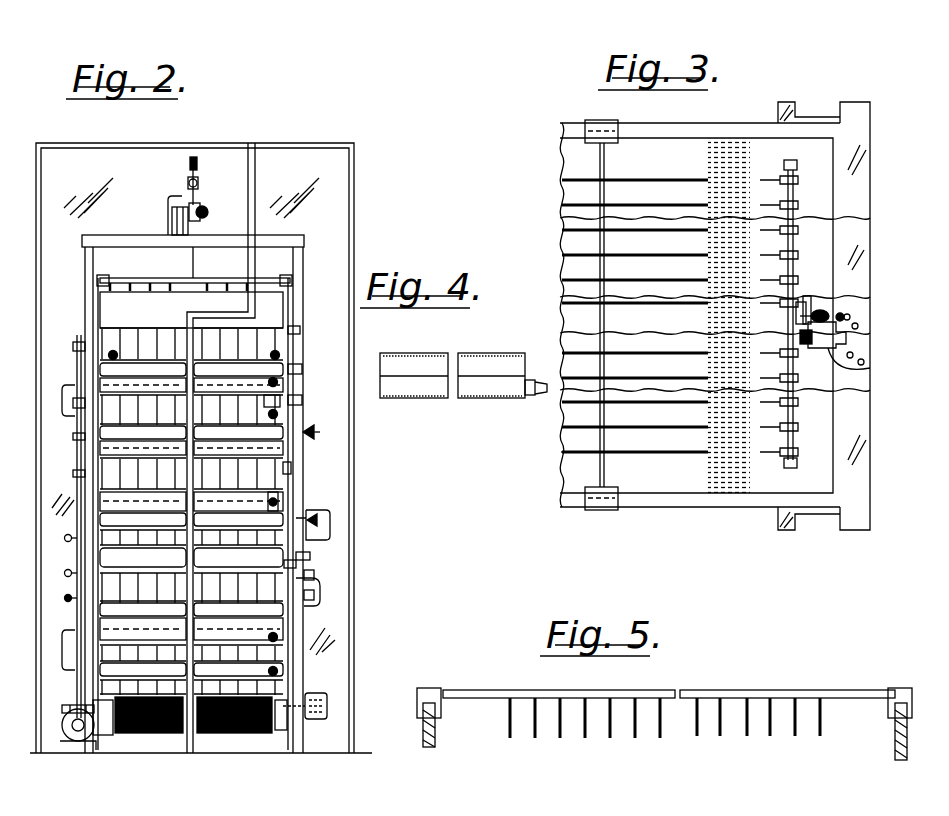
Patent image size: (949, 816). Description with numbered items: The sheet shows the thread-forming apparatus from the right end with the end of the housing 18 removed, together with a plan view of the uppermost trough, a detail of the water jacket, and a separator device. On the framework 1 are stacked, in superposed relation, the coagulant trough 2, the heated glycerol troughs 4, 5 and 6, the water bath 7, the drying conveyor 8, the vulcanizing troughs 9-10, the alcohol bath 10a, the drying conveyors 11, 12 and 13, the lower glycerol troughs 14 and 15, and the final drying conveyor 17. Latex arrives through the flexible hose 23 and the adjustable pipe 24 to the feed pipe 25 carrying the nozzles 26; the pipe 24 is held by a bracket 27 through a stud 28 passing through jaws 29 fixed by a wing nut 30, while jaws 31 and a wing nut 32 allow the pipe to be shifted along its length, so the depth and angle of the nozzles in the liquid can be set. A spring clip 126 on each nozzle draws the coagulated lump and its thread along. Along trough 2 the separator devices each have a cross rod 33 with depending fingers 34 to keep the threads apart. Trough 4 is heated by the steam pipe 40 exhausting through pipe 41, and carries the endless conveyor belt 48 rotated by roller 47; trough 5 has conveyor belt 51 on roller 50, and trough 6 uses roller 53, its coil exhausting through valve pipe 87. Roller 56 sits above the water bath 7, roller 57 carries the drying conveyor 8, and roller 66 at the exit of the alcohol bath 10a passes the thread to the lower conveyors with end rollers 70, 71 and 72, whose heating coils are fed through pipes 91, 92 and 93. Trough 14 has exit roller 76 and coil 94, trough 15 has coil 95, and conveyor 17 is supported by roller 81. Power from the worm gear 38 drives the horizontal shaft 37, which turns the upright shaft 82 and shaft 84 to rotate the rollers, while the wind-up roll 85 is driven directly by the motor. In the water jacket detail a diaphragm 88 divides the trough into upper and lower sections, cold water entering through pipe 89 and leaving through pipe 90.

In FIG. 2, the framework 1 is at (82, 246).
In FIG. 3, the framework 1 is at (817, 112).
In FIG. 2, the trough 2 is at (147, 292).
In FIG. 3, the trough 2 is at (697, 507).
In FIG. 5, the trough 2 is at (420, 731).
In FIG. 2, the trough 4 is at (292, 346).
In FIG. 2, the trough 5 is at (296, 385).
In FIG. 2, the trough 6 is at (296, 415).
In FIG. 2, the water bath 7 is at (296, 456).
In FIG. 2, the drying conveyor 8 is at (290, 472).
In FIG. 2, the trough 9 is at (290, 498).
In FIG. 4, the troughs 9-10 is at (428, 398).
In FIG. 2, the alcohol bath 10a is at (296, 553).
In FIG. 2, the drying conveyor 11 is at (296, 566).
In FIG. 2, the drying conveyor 12 is at (306, 588).
In FIG. 2, the drying conveyor 13 is at (305, 609).
In FIG. 2, the trough 14 is at (292, 636).
In FIG. 2, the trough 15 is at (296, 669).
In FIG. 2, the drying conveyor 17 is at (288, 699).
In FIG. 2, the housing 18 is at (40, 269).
In FIG. 2, the flexible hose 23 is at (198, 164).
In FIG. 3, the flexible hose 23 is at (845, 316).
In FIG. 2, the adjustable pipe 24 is at (199, 191).
In FIG. 3, the adjustable pipe 24 is at (807, 300).
In FIG. 3, the feed pipe 25 is at (796, 244).
In FIG. 3, the nozzles 26 is at (780, 178).
In FIG. 2, the bracket 27 is at (172, 213).
In FIG. 3, the bracket 27 is at (848, 338).
In FIG. 2, the stud 28 is at (175, 203).
In FIG. 3, the stud 28 is at (830, 352).
In FIG. 3, the jaws 29 is at (796, 318).
In FIG. 3, the wing nut 30 is at (800, 340).
In FIG. 2, the jaws 31 is at (208, 211).
In FIG. 3, the jaws 31 is at (832, 312).
In FIG. 2, the wing nut 32 is at (205, 218).
In FIG. 3, the wing nut 32 is at (886, 306).
In FIG. 2, the cross rod 33 is at (268, 279).
In FIG. 3, the cross rod 33 is at (606, 246).
In FIG. 5, the cross rod 33 is at (782, 695).
In FIG. 2, the fingers 34 is at (170, 285).
In FIG. 5, the fingers 34 is at (536, 738).
In FIG. 2, the horizontal shaft 37 is at (77, 740).
In FIG. 2, the worm gear 38 is at (60, 718).
In FIG. 2, the steam pipe 40 is at (275, 350).
In FIG. 2, the pipe 41 is at (115, 350).
In FIG. 2, the roller 47 is at (296, 328).
In FIG. 2, the endless conveyor belt 48 is at (149, 330).
In FIG. 2, the roller 50 is at (302, 366).
In FIG. 2, the conveyor belt 51 is at (191, 369).
In FIG. 2, the roller 53 is at (302, 399).
In FIG. 2, the roller 56 is at (304, 437).
In FIG. 2, the roller 57 is at (292, 471).
In FIG. 2, the roller 66 is at (330, 526).
In FIG. 2, the roller 70 is at (310, 557).
In FIG. 2, the roller 71 is at (314, 575).
In FIG. 2, the roller 72 is at (314, 594).
In FIG. 2, the roller 76 is at (114, 625).
In FIG. 2, the roller 81 is at (104, 686).
In FIG. 2, the upright shaft 82 is at (76, 462).
In FIG. 2, the shaft 84 is at (64, 598).
In FIG. 2, the wind-up roll 85 is at (272, 732).
In FIG. 2, the valve pipe 87 is at (272, 401).
In FIG. 2, the diaphragm 88 is at (272, 378).
In FIG. 4, the diaphragm 88 is at (502, 370).
In FIG. 2, the pipe 89 is at (273, 498).
In FIG. 4, the pipe 89 is at (540, 396).
In FIG. 2, the pipe 90 is at (66, 535).
In FIG. 2, the pipe 91 is at (305, 538).
In FIG. 2, the pipe 92 is at (64, 573).
In FIG. 2, the pipe 93 is at (322, 605).
In FIG. 2, the coil 94 is at (275, 632).
In FIG. 2, the coil 95 is at (268, 671).
In FIG. 3, the spring clip 126 is at (552, 453).